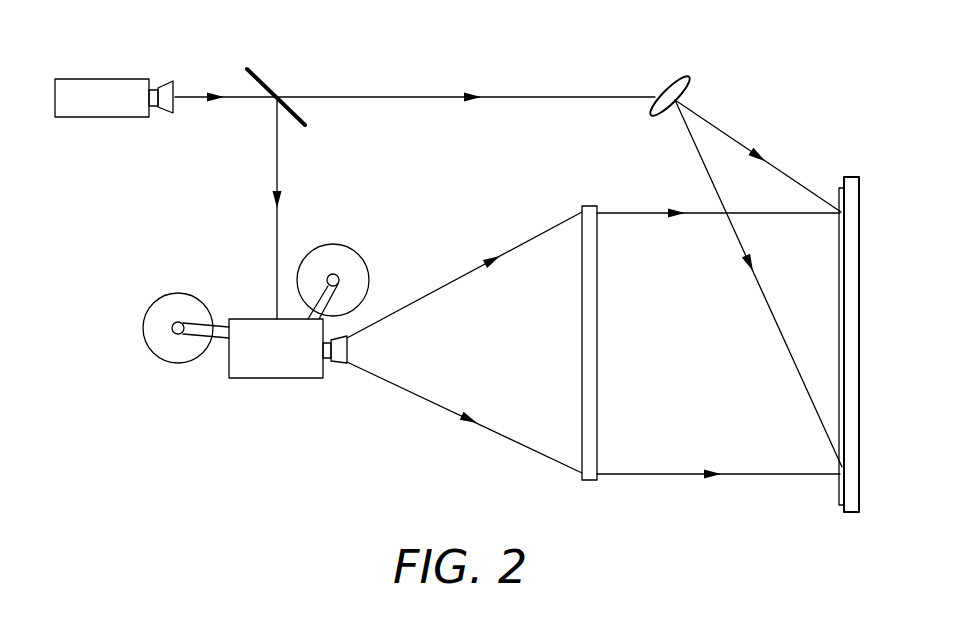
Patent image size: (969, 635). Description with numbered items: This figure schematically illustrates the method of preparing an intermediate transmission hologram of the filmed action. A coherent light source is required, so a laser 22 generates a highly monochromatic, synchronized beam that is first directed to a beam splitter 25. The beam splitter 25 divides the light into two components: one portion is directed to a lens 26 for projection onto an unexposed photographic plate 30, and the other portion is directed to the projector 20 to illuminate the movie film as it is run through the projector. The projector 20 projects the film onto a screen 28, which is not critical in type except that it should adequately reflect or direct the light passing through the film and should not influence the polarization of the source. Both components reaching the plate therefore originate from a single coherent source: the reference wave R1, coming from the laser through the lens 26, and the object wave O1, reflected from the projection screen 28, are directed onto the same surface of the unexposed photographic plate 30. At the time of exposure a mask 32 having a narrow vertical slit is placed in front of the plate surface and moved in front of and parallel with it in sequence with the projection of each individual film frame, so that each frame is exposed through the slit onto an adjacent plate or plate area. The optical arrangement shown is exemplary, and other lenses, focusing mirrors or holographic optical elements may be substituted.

The projector 20 is at (253, 380).
The laser 22 is at (128, 78).
The beam splitter 25 is at (252, 70).
The lens 26 is at (677, 78).
The screen 28 is at (587, 483).
The unexposed photographic plate 30 is at (860, 270).
The mask 32 is at (835, 492).
The reference wave R1 is at (723, 128).
The object wave O1 is at (665, 477).